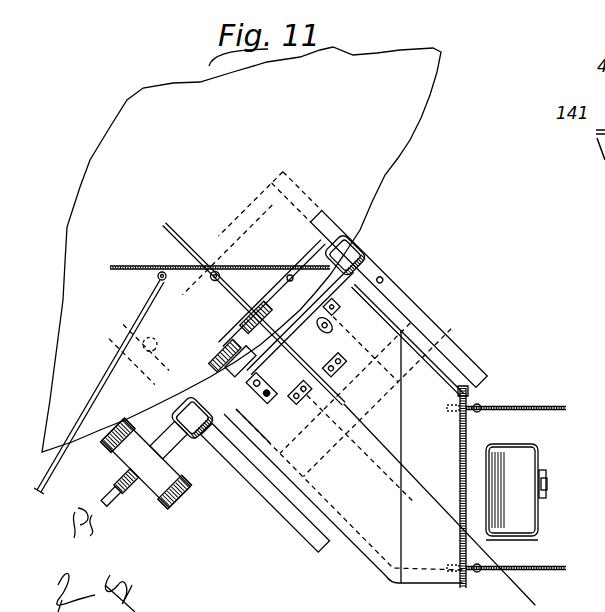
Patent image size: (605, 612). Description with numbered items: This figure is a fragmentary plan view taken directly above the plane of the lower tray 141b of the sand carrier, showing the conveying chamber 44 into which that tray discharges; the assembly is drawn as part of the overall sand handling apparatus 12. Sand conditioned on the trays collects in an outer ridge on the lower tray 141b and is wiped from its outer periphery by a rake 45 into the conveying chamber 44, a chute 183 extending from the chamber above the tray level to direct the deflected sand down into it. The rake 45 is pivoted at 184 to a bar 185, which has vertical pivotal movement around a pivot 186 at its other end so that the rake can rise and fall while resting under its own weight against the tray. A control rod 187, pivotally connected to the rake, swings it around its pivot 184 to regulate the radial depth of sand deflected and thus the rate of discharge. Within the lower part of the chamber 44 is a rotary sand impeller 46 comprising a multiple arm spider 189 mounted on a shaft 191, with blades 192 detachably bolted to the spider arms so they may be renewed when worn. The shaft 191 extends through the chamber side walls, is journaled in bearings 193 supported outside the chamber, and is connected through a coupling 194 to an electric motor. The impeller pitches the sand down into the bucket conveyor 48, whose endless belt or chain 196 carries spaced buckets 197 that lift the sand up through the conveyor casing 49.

The drive unit 12 is at (165, 205).
The conveying chamber 44 is at (283, 453).
The rake 45 is at (147, 259).
The rotary sand impeller 46 is at (267, 437).
The bucket conveyor 48 is at (541, 447).
The conveyor casing 49 is at (566, 409).
The lower tray 141b is at (370, 175).
The chute 183 is at (362, 300).
The pivot 184 is at (216, 272).
The bar 185 is at (170, 327).
The pivot 186 is at (314, 380).
The control rod 187 is at (68, 445).
The multiple arm spider 189 is at (303, 328).
The shaft 191 is at (250, 412).
The blades 192 is at (337, 308).
The bearings 193 is at (362, 253).
The coupling 194 is at (177, 500).
The endless belt or chain 196 is at (548, 489).
The buckets 197 is at (545, 534).